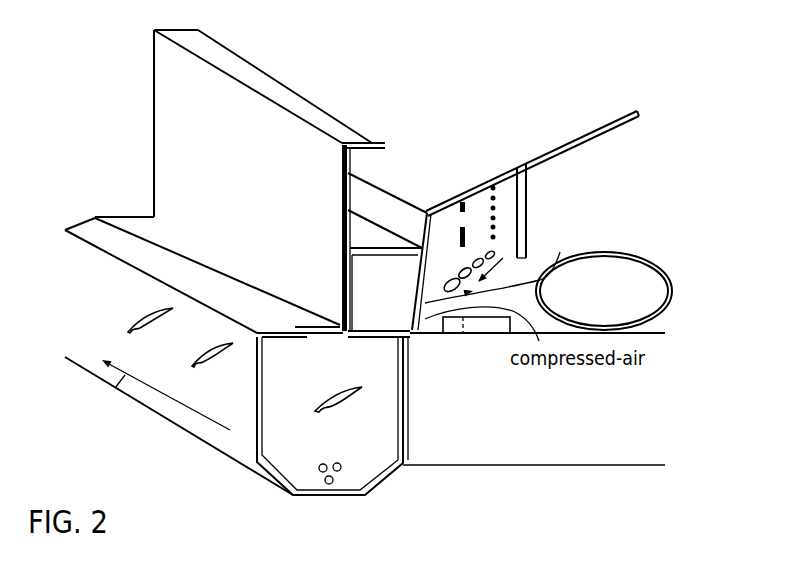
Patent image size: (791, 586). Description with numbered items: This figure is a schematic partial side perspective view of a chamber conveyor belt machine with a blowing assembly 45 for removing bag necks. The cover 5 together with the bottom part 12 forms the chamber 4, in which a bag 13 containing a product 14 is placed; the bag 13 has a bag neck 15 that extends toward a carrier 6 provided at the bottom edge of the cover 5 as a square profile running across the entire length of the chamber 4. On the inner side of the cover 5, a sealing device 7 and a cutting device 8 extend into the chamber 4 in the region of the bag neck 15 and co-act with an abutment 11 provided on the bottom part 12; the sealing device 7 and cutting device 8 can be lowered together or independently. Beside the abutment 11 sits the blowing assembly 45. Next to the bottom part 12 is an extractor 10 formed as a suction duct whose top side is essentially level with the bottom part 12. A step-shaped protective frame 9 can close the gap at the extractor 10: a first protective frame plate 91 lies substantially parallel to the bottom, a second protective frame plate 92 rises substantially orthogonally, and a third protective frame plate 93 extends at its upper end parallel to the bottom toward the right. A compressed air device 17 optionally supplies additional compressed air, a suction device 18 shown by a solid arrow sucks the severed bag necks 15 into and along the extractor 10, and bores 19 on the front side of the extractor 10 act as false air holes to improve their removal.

The chamber 4 is at (565, 211).
The cover 5 is at (572, 140).
The carrier 6 is at (378, 270).
The sealing device 7 is at (493, 186).
The cutting device 8 is at (462, 200).
The protective frame 9 is at (225, 169).
The extractor 10 is at (280, 467).
The abutment 11 is at (486, 335).
The bottom part 12 is at (560, 450).
The bag 13 is at (623, 270).
The product 14 is at (640, 280).
The bag neck 15 is at (203, 363).
The compressed air device 17 is at (577, 210).
The suction device 18 is at (118, 388).
The bores 19 is at (337, 473).
The blowing assembly 45 is at (451, 341).
The first protective frame plate 91 is at (147, 228).
The second protective frame plate 92 is at (162, 140).
The third protective frame plate 93 is at (237, 67).